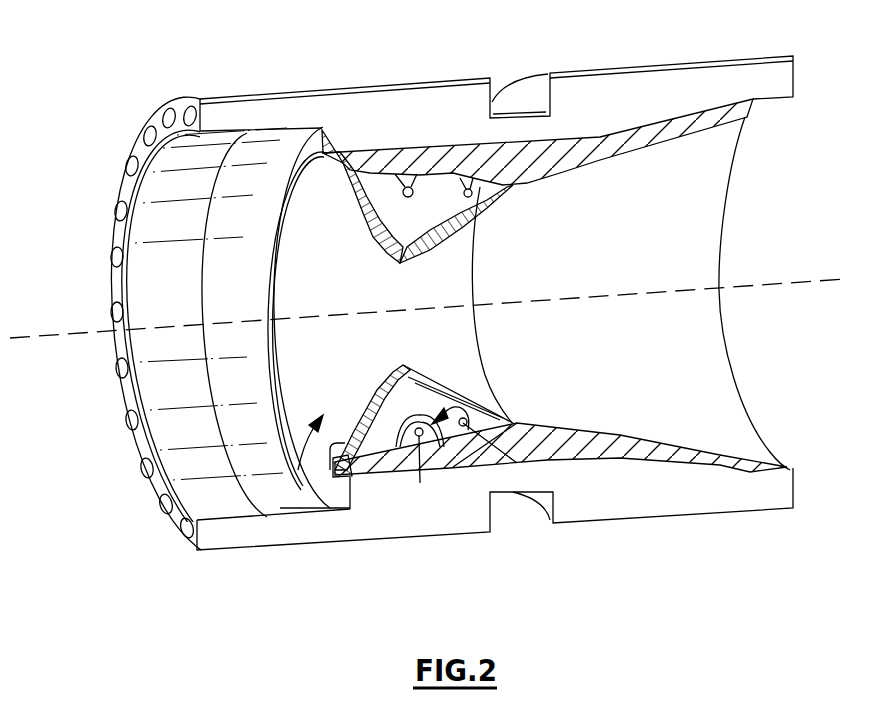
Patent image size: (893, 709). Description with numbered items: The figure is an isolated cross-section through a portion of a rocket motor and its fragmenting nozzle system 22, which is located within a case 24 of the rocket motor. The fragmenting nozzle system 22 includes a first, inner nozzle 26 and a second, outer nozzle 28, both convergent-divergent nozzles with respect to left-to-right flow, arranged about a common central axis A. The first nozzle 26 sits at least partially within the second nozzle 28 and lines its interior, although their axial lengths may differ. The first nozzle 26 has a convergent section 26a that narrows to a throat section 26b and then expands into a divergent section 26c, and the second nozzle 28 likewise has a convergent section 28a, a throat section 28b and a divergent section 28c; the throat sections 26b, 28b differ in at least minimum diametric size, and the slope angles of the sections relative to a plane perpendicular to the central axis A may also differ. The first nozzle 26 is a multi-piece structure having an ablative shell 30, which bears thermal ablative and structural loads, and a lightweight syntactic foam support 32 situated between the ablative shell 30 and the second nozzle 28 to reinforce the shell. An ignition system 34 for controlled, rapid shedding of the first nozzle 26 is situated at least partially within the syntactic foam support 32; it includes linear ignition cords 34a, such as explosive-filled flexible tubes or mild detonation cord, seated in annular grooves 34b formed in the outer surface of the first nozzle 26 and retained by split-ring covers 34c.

The fragmenting nozzle system 22 is at (103, 476).
The case 24 is at (597, 62).
The first nozzle 26 is at (283, 553).
The convergent section 26a is at (303, 377).
The throat section 26b is at (402, 363).
The divergent section 26c is at (477, 386).
The second nozzle 28 is at (607, 472).
The convergent section 28a is at (262, 283).
The throat section 28b is at (418, 385).
The divergent section 28c is at (722, 412).
The ablative shell 30 is at (322, 470).
The syntactic foam support 32 is at (395, 420).
The ignition system 34 is at (443, 420).
The linear ignition cord 34a is at (407, 443).
The annular groove 34b is at (437, 453).
The cover 34c is at (420, 453).
The central axis A is at (777, 283).